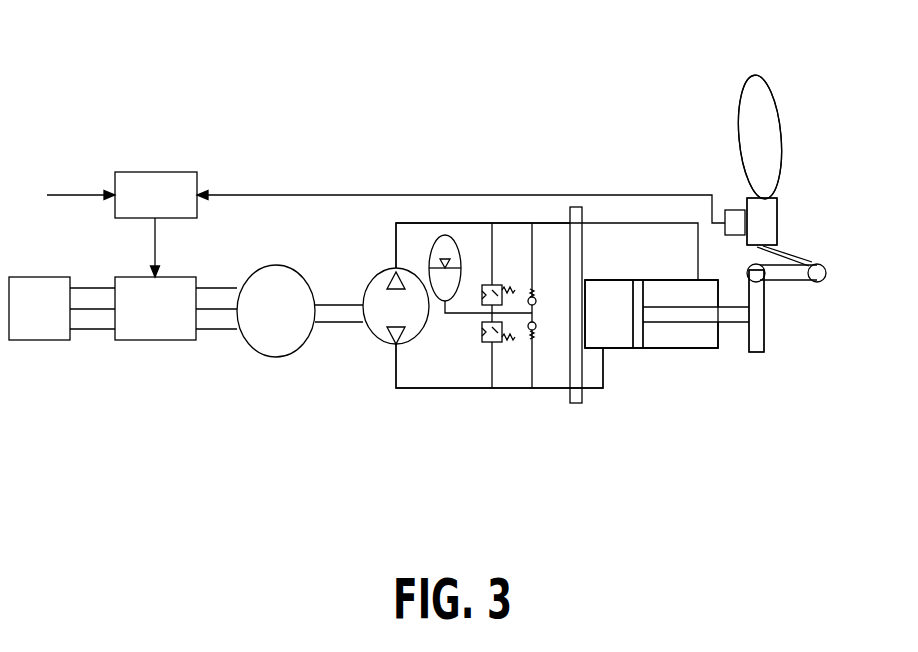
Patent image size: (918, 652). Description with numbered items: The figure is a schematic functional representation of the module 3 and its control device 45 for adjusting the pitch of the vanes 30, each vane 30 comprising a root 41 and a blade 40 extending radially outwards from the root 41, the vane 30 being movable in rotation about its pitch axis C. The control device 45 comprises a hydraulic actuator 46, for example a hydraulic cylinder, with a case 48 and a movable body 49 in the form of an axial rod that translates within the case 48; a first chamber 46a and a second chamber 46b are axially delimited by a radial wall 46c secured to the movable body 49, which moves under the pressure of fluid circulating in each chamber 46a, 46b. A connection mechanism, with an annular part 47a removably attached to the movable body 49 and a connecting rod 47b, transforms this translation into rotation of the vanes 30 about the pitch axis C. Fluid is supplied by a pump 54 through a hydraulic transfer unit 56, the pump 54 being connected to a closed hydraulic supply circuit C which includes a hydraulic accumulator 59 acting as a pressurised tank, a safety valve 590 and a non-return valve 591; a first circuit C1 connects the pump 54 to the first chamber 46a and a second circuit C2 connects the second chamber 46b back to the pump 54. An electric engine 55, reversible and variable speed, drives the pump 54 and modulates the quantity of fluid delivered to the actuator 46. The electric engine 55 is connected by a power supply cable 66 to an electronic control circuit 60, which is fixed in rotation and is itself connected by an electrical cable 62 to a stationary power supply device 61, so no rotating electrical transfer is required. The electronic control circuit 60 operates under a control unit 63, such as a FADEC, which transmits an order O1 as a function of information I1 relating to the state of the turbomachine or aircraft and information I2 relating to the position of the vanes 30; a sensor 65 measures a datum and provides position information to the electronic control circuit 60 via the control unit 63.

The module 3 is at (835, 186).
The vane 30 is at (787, 96).
The blade 40 is at (760, 140).
The root 41 is at (770, 228).
The control device 45 is at (437, 450).
The hydraulic actuator 46 is at (657, 350).
The first chamber 46a is at (605, 335).
The second chamber 46b is at (690, 341).
The radial wall 46c is at (632, 304).
The annular part 47a is at (772, 300).
The connecting rod 47b is at (805, 262).
The case 48 is at (662, 282).
The movable body 49 is at (723, 323).
The pump 54 is at (375, 327).
The electric engine 55 is at (262, 345).
The hydraulic transfer unit 56 is at (576, 405).
The hydraulic accumulator 59 is at (443, 245).
The safety valve 590 is at (495, 258).
The non-return valve 591 is at (530, 357).
The electronic control circuit 60 is at (150, 340).
The power supply device 61 is at (35, 340).
The electrical cable 62 is at (90, 330).
The control unit 63 is at (153, 172).
The sensor 65 is at (735, 210).
The power supply cable 66 is at (218, 288).
The hydraulic supply circuit C is at (412, 390).
The first circuit C1 is at (496, 226).
The second circuit C2 is at (497, 390).
The information I1 is at (221, 192).
The information I2 is at (55, 192).
The order O1 is at (147, 248).